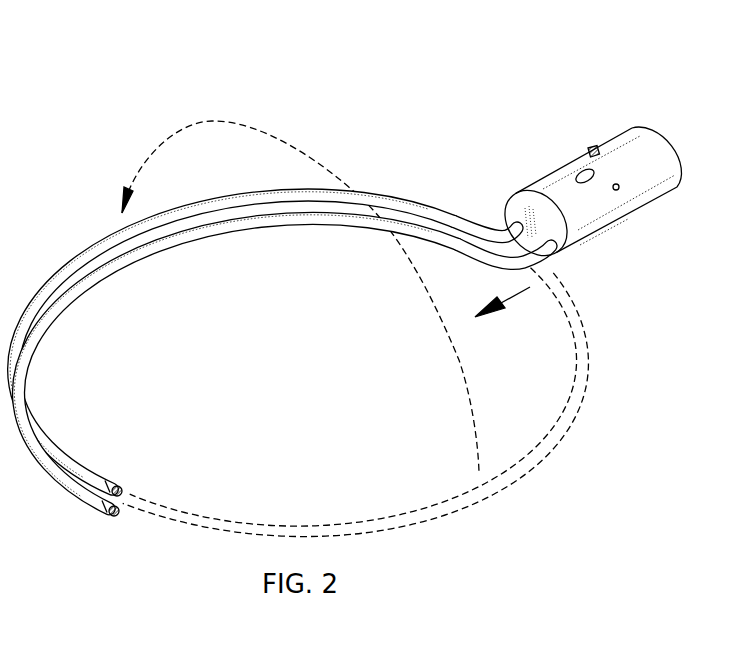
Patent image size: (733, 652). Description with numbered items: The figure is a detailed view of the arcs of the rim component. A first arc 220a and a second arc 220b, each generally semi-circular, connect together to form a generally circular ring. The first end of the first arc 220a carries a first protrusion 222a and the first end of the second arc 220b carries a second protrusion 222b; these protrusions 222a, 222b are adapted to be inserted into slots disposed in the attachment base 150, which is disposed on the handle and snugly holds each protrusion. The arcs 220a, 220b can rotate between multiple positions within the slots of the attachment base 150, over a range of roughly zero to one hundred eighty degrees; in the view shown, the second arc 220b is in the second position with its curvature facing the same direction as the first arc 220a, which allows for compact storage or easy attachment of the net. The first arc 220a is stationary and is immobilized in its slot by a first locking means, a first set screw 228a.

The attachment base 150 is at (633, 153).
The first arc 220a is at (293, 286).
The second arc 220b is at (356, 420).
The first protrusion 222a is at (522, 253).
The second protrusion 222b is at (556, 262).
The first set screw 228a is at (590, 150).